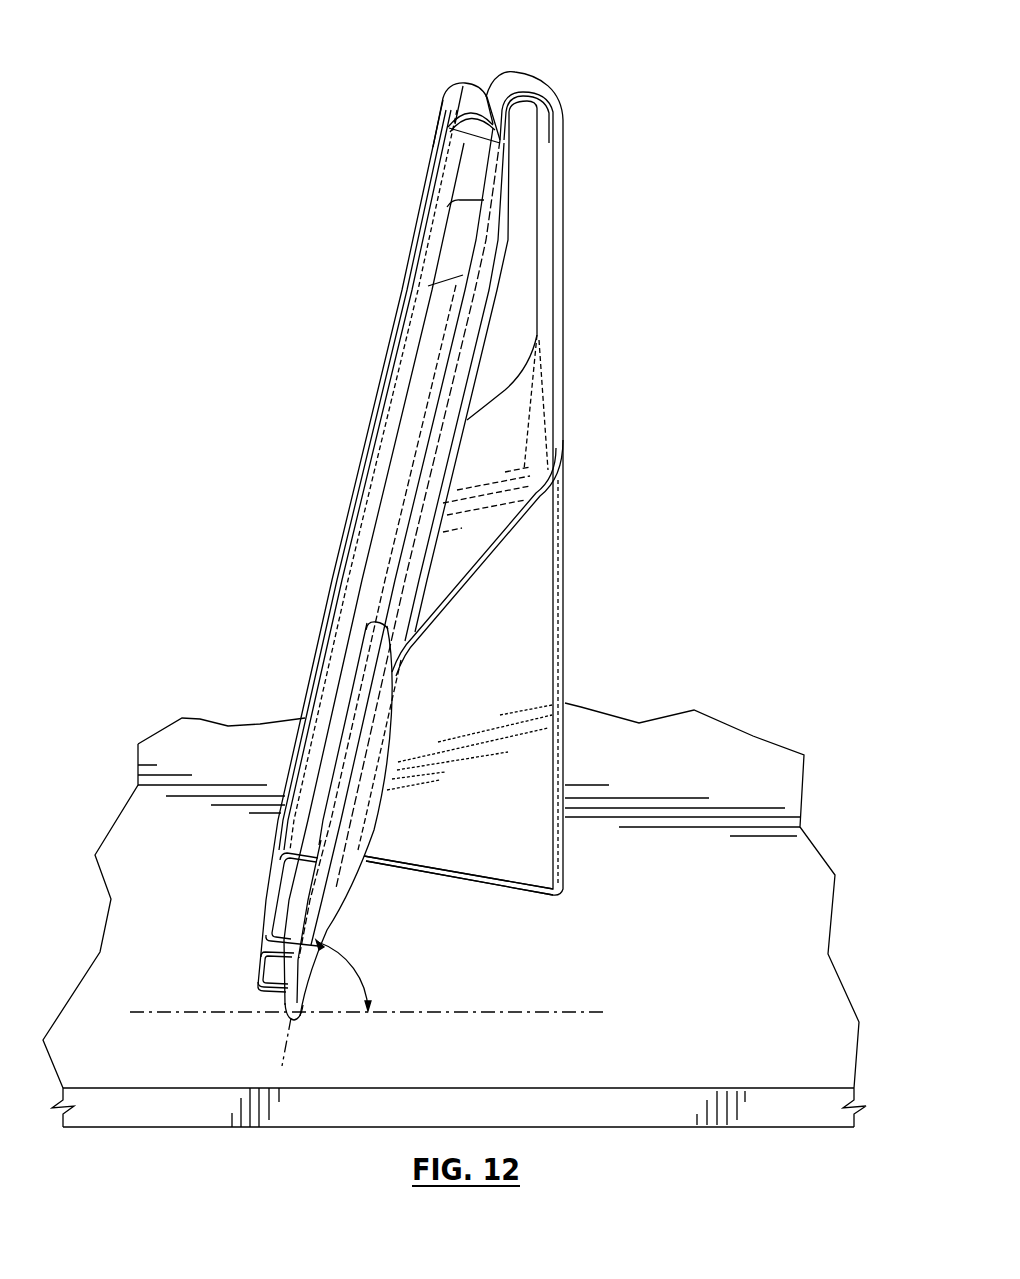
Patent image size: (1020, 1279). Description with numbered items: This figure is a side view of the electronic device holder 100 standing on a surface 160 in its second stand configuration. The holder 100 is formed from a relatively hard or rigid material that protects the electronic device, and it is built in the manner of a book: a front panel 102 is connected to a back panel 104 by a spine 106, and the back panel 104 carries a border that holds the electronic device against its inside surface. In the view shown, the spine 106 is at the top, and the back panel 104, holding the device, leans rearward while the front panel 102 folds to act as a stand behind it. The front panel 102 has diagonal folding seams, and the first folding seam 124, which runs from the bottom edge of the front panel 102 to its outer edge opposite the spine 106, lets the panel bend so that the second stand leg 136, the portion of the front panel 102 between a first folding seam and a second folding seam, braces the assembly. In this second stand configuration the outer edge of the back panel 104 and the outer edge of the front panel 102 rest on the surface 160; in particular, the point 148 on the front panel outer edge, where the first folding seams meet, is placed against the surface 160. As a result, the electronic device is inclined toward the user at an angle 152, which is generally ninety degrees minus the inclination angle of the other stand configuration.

The electronic device holder 100 is at (281, 324).
The front panel 102 is at (586, 384).
The back panel 104 is at (317, 613).
The spine 106 is at (532, 83).
The first folding seam 124 is at (558, 568).
The second stand leg 136 is at (520, 671).
The point 148 is at (561, 895).
The angle 152 is at (358, 972).
The surface 160 is at (477, 1061).